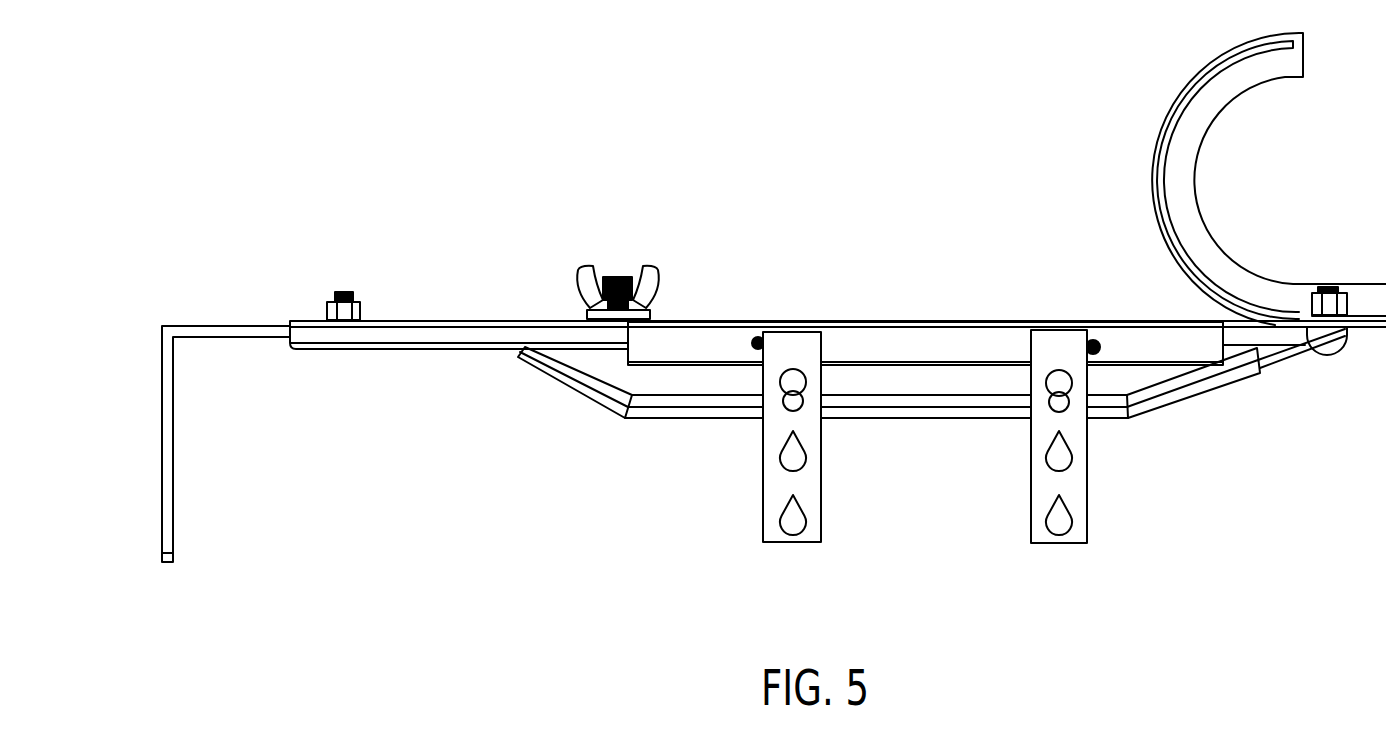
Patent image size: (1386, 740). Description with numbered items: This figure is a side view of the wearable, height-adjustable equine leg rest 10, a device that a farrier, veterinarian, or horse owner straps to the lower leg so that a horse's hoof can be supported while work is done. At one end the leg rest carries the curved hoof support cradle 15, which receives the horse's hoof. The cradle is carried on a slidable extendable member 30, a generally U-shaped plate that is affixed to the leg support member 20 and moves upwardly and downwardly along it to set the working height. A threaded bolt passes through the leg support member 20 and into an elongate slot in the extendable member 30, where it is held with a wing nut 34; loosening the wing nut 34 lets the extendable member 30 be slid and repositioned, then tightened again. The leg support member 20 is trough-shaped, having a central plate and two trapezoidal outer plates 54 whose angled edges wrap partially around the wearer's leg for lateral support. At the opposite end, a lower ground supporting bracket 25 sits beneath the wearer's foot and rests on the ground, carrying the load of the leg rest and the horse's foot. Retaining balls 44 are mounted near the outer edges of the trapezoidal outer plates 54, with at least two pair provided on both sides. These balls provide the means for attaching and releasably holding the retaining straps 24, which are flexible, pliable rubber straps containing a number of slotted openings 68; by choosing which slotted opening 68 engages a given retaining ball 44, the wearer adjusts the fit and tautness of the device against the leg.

The equine leg rest 10 is at (873, 122).
The hoof support cradle 15 is at (1155, 170).
The leg support member 20 is at (657, 445).
The retaining straps 24 is at (925, 611).
The ground supporting bracket 25 is at (167, 477).
The extendable member 30 is at (428, 337).
The wing nut 34 is at (575, 268).
The retaining balls 44 is at (926, 399).
The trapezoidal outer plates 54 is at (915, 433).
The slotted openings 68 is at (1057, 530).